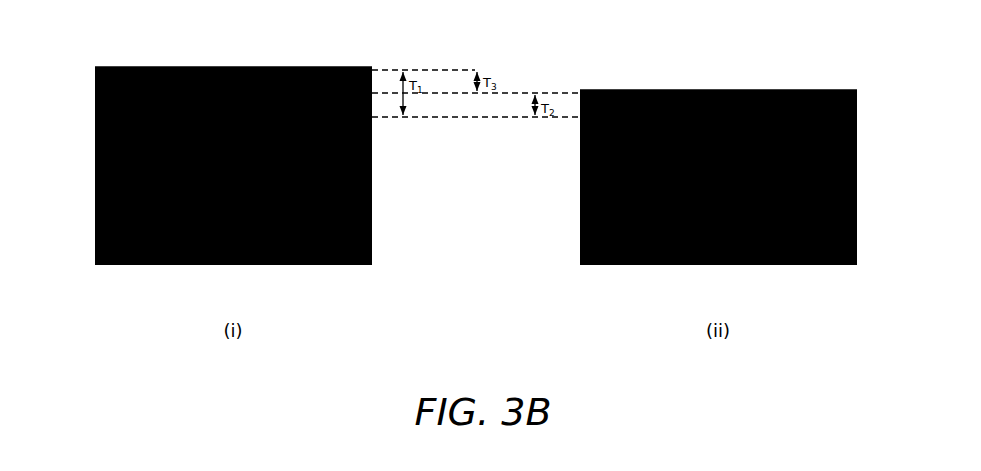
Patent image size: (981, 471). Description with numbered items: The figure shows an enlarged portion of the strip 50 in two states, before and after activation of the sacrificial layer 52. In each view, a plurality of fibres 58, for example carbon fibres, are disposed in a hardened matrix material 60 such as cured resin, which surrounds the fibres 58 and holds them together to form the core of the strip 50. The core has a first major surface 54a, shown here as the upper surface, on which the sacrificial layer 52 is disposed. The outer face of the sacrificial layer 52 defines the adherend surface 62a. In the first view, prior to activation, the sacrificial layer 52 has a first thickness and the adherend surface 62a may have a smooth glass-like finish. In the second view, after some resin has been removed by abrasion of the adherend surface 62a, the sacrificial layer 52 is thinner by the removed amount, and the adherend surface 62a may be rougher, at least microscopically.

The strip 50 is at (472, 165).
The sacrificial layer 52 is at (180, 80).
The first major surface 54a is at (113, 118).
The fibres 58 is at (337, 265).
The matrix material 60 is at (358, 152).
The adherend surface 62a is at (293, 66).